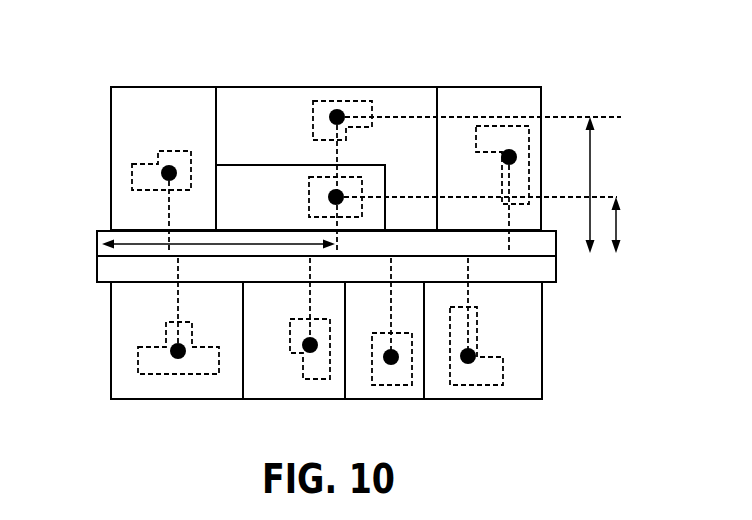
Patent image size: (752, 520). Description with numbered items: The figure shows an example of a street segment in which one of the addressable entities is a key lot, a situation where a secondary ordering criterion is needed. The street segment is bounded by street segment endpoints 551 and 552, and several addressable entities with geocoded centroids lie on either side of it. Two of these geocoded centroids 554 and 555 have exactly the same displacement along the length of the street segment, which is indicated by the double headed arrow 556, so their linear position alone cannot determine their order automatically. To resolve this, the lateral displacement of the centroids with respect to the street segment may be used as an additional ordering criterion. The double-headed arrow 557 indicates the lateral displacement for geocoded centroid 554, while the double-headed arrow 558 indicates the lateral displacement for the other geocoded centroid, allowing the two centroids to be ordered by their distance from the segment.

The street segment endpoint 551 is at (97, 263).
The street segment endpoint 552 is at (557, 272).
The geocoded centroid 554 is at (336, 197).
The geocoded centroid 555 is at (337, 117).
The double headed arrow 556 is at (145, 243).
The double-headed arrow 557 is at (616, 223).
The double-headed arrow 558 is at (590, 177).